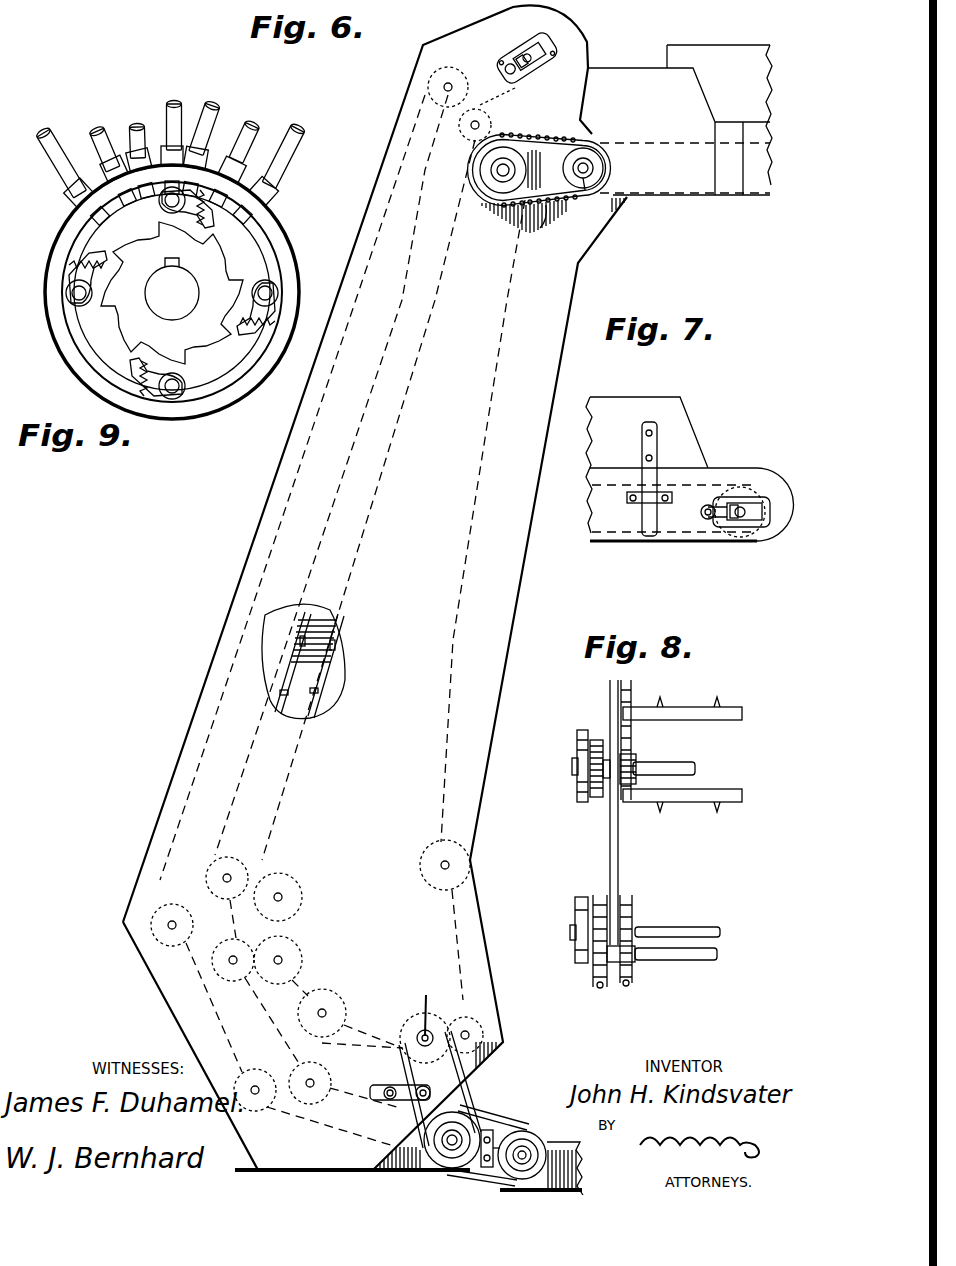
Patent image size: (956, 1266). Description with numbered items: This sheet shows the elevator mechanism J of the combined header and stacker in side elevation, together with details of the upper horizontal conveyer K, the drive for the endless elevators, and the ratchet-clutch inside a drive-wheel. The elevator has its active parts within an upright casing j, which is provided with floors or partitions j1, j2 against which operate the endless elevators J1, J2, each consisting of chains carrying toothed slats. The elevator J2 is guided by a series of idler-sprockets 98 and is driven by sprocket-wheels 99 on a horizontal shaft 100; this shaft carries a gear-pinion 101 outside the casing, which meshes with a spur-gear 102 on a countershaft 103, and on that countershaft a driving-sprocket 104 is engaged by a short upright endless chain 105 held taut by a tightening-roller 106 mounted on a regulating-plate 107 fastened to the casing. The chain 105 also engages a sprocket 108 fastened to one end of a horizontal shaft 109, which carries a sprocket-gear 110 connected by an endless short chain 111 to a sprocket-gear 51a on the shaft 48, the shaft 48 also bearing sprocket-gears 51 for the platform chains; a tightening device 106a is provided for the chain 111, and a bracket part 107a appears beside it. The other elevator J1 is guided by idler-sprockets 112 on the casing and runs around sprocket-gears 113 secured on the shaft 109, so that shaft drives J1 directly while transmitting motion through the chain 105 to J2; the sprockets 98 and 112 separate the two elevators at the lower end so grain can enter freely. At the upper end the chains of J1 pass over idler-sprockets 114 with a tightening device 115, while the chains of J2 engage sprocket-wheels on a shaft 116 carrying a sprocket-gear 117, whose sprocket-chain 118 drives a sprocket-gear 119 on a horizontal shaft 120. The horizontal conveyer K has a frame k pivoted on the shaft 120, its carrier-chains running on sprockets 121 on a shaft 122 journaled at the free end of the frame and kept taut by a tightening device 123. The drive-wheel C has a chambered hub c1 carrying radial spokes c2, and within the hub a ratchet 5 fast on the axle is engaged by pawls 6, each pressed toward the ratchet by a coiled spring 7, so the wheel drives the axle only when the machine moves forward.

In FIG. 9, the ratchet 5 is at (232, 274).
In FIG. 9, the pawls 6 is at (70, 266).
In FIG. 9, the coiled spring 7 is at (250, 334).
In FIG. 9, the carrying-wheels C is at (62, 226).
In FIG. 9, the chambered hub c1 is at (265, 229).
In FIG. 9, the radial spokes c2 is at (64, 152).
In FIG. 6, the elevator mechanism J is at (222, 641).
In FIG. 8, the elevator mechanism J is at (688, 812).
In FIG. 6, the endless elevator J1 is at (385, 195).
In FIG. 6, the endless elevator J2 is at (440, 283).
In FIG. 8, the endless elevator J2 is at (676, 716).
In FIG. 6, the casing j is at (182, 756).
In FIG. 6, the floor or partition j1 is at (274, 640).
In FIG. 6, the floor or partition j2 is at (340, 673).
In FIG. 6, the horizontal upper conveyer K is at (690, 216).
In FIG. 7, the horizontal upper conveyer K is at (689, 469).
In FIG. 7, the conveyer-frame k is at (687, 544).
In FIG. 6, the shaft 48 is at (532, 1152).
In FIG. 8, the shaft 48 is at (702, 963).
In FIG. 8, the sprocket-gears 51 is at (629, 986).
In FIG. 6, the sprocket-gear 51a is at (535, 1123).
In FIG. 8, the sprocket-gear 51a is at (598, 988).
In FIG. 6, the idler-sprockets 98 is at (290, 885).
In FIG. 8, the sprocket-wheels 99 is at (636, 763).
In FIG. 6, the horizontal shaft 100 is at (460, 1016).
In FIG. 8, the horizontal shaft 100 is at (695, 766).
In FIG. 6, the gear-pinion 101 is at (480, 1036).
In FIG. 8, the gear-pinion 101 is at (599, 797).
In FIG. 6, the spur-gear 102 is at (418, 1028).
In FIG. 6, the countershaft 103 is at (445, 1008).
In FIG. 6, the driving-sprocket 104 is at (362, 1039).
In FIG. 8, the driving-sprocket 104 is at (585, 786).
In FIG. 6, the endless chain 105 is at (468, 1092).
In FIG. 6, the tightening-roller 106 is at (436, 1089).
In FIG. 6, the tightening device 106a is at (513, 1196).
In FIG. 6, the regulating-plate 107 is at (390, 1087).
In FIG. 6, the bracket arm 107a is at (514, 1133).
In FIG. 6, the sprocket 108 is at (425, 1173).
In FIG. 8, the sprocket 108 is at (577, 919).
In FIG. 6, the horizontal shaft 109 is at (452, 1148).
In FIG. 8, the horizontal shaft 109 is at (662, 931).
In FIG. 8, the sprocket-gear 110 is at (598, 897).
In FIG. 6, the endless short chain 111 is at (492, 1117).
In FIG. 6, the idler-sprockets 112 is at (178, 915).
In FIG. 8, the sprocket-gears 113 is at (632, 903).
In FIG. 6, the idler-sprockets 114 is at (452, 80).
In FIG. 6, the tightening device 115 is at (560, 55).
In FIG. 6, the shaft 116 is at (499, 182).
In FIG. 6, the sprocket-gear 117 is at (518, 158).
In FIG. 6, the sprocket-chain 118 is at (553, 199).
In FIG. 6, the sprocket-gear 119 is at (590, 140).
In FIG. 6, the horizontal shaft 120 is at (585, 195).
In FIG. 7, the sprockets 121 is at (742, 490).
In FIG. 7, the shaft 122 is at (740, 520).
In FIG. 7, the tightening device 123 is at (772, 512).